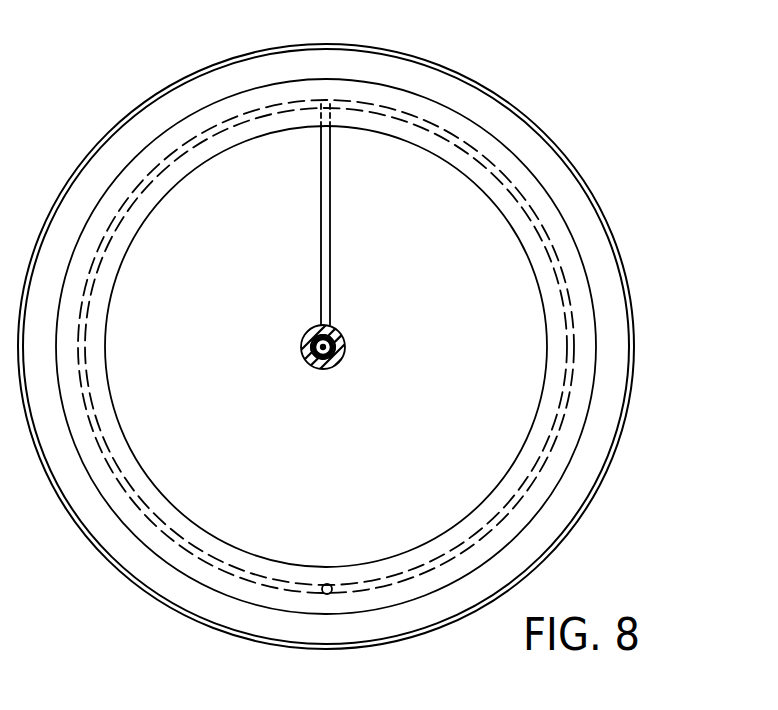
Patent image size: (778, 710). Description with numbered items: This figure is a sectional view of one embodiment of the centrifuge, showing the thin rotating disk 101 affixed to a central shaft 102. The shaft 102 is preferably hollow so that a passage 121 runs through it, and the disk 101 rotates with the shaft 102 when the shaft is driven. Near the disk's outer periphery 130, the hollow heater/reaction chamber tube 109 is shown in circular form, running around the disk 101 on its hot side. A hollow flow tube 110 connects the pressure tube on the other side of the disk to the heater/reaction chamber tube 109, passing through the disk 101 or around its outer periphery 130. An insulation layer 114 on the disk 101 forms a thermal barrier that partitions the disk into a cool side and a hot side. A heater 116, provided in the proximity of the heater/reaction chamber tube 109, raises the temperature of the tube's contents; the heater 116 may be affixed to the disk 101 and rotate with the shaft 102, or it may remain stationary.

The outer periphery 130 is at (162, 71).
The rotating disk 101 is at (492, 85).
The insulation layer 114 is at (549, 165).
The heater 116 is at (565, 230).
The heater/reaction chamber tube 109 is at (562, 274).
The shaft 102 is at (337, 334).
The passage 121 is at (325, 359).
The flow tube 110 is at (323, 576).